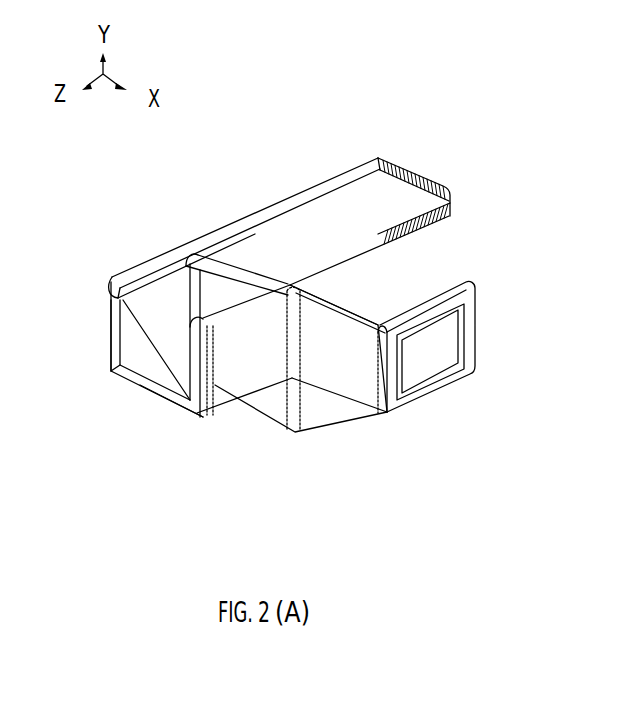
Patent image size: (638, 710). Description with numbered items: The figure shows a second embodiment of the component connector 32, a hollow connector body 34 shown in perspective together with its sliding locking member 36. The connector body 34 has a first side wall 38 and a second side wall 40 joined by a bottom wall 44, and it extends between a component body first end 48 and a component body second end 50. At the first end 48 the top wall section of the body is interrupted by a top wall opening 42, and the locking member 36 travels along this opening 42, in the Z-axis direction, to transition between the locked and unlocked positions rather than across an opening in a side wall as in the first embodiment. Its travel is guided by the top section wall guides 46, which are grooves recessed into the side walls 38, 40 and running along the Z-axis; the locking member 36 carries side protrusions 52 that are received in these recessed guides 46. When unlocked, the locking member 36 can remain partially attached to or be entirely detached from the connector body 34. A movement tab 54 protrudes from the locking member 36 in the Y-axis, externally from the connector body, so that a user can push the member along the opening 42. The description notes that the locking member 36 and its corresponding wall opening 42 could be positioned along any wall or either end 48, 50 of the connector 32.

The component connector 32 is at (252, 184).
The connector body 34 is at (337, 363).
The locking member 36 is at (344, 220).
The first side wall 38 is at (185, 311).
The second side wall 40 is at (247, 340).
The top wall opening 42 is at (180, 297).
The bottom wall 44 is at (172, 397).
The top section wall guides 46 is at (201, 417).
The component body first end 48 is at (157, 373).
The component body second end 50 is at (453, 330).
The locking member side protrusions 52 is at (199, 266).
The movement tab 54 is at (420, 168).